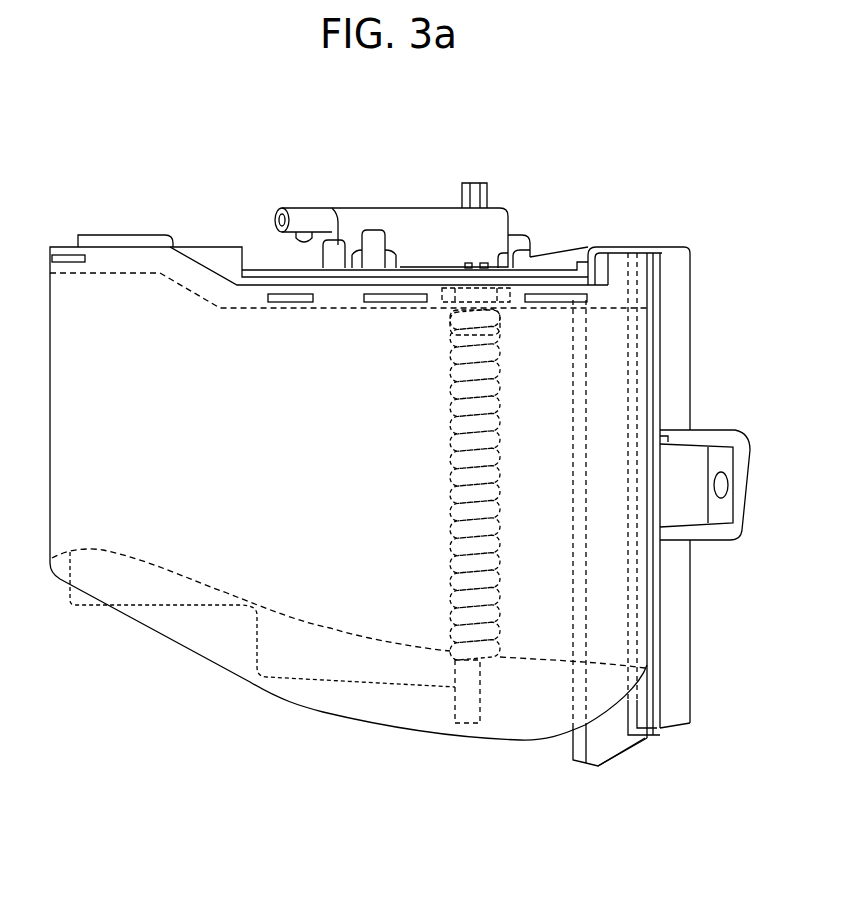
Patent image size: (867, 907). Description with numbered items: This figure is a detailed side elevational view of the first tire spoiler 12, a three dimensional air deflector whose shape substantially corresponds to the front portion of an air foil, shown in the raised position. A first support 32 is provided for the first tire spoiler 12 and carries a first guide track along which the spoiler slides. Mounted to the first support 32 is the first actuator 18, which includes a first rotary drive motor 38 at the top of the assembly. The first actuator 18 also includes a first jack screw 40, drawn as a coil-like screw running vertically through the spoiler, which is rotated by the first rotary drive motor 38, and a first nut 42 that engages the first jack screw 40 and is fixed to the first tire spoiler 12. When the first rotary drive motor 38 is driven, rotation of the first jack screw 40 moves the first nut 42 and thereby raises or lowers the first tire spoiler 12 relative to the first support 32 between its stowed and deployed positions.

The first tire spoiler 12 is at (322, 712).
The first actuator 18 is at (584, 201).
The first support 32 is at (686, 258).
The first rotary drive motor 38 is at (404, 220).
The first jack screw 40 is at (452, 445).
The first nut 42 is at (446, 297).